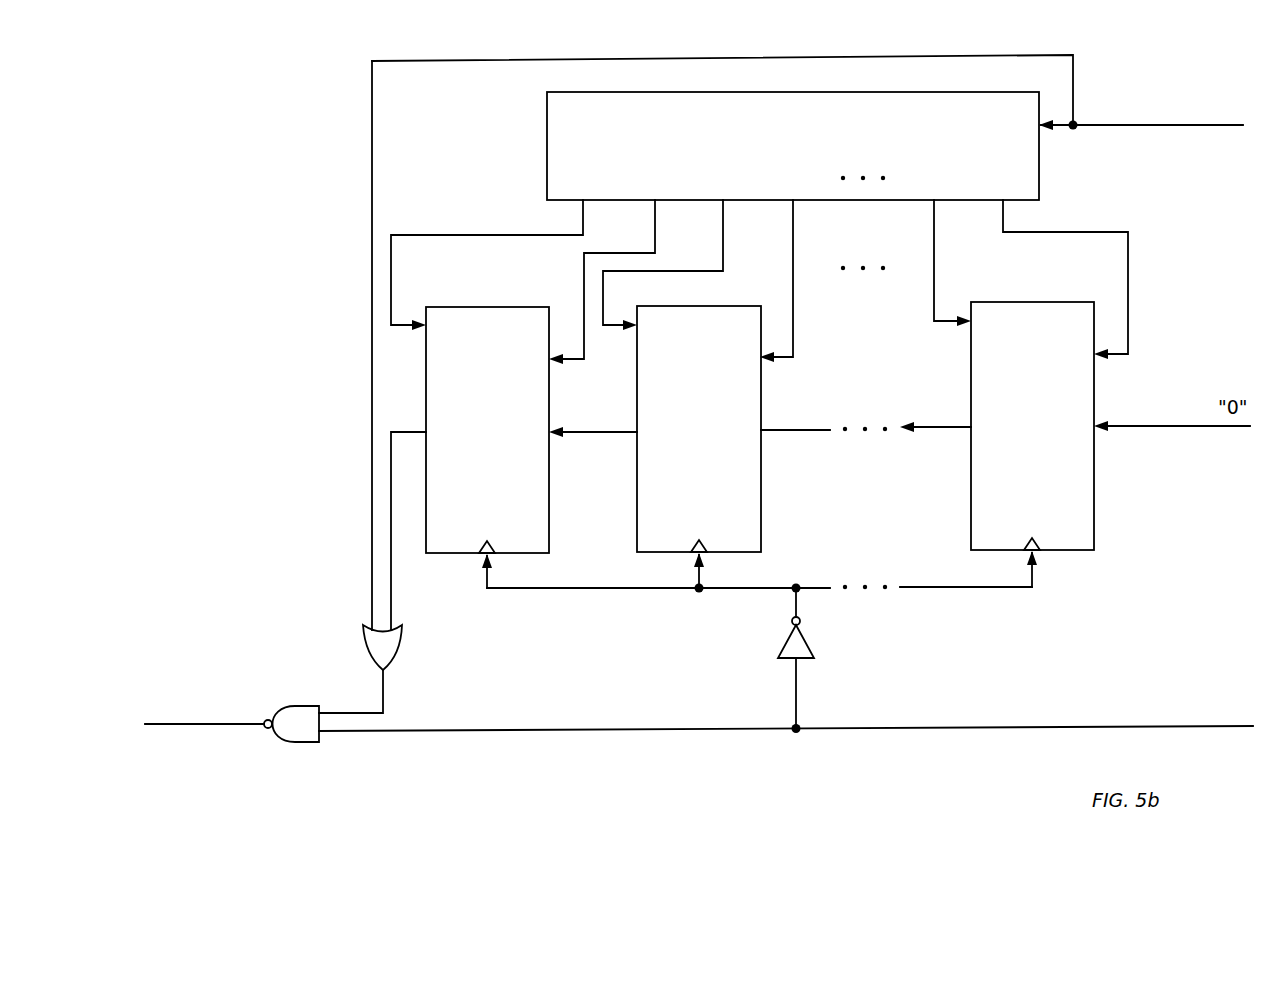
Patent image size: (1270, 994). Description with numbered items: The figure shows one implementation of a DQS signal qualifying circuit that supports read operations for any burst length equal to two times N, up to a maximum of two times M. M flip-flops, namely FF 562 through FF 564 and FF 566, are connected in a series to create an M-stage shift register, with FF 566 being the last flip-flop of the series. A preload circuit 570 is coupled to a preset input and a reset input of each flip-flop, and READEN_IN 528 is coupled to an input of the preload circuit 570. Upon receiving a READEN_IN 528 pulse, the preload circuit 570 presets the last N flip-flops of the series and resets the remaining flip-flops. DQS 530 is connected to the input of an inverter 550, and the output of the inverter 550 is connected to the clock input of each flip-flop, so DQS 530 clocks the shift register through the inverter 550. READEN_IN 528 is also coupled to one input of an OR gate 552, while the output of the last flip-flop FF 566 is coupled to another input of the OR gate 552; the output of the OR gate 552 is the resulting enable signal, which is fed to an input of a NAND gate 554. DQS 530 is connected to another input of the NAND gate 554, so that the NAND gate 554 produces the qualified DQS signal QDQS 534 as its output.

The preload circuit 570 is at (787, 128).
The flip-flop 566 is at (470, 473).
The flip-flop 564 is at (682, 472).
The flip-flop 562 is at (1015, 468).
The OR gate 552 is at (363, 641).
The NAND gate 554 is at (300, 742).
The inverter 550 is at (786, 645).
The READEN_IN 528 is at (807, 92).
The DQS 530 is at (786, 717).
The qualified DQS signal 534 is at (204, 711).